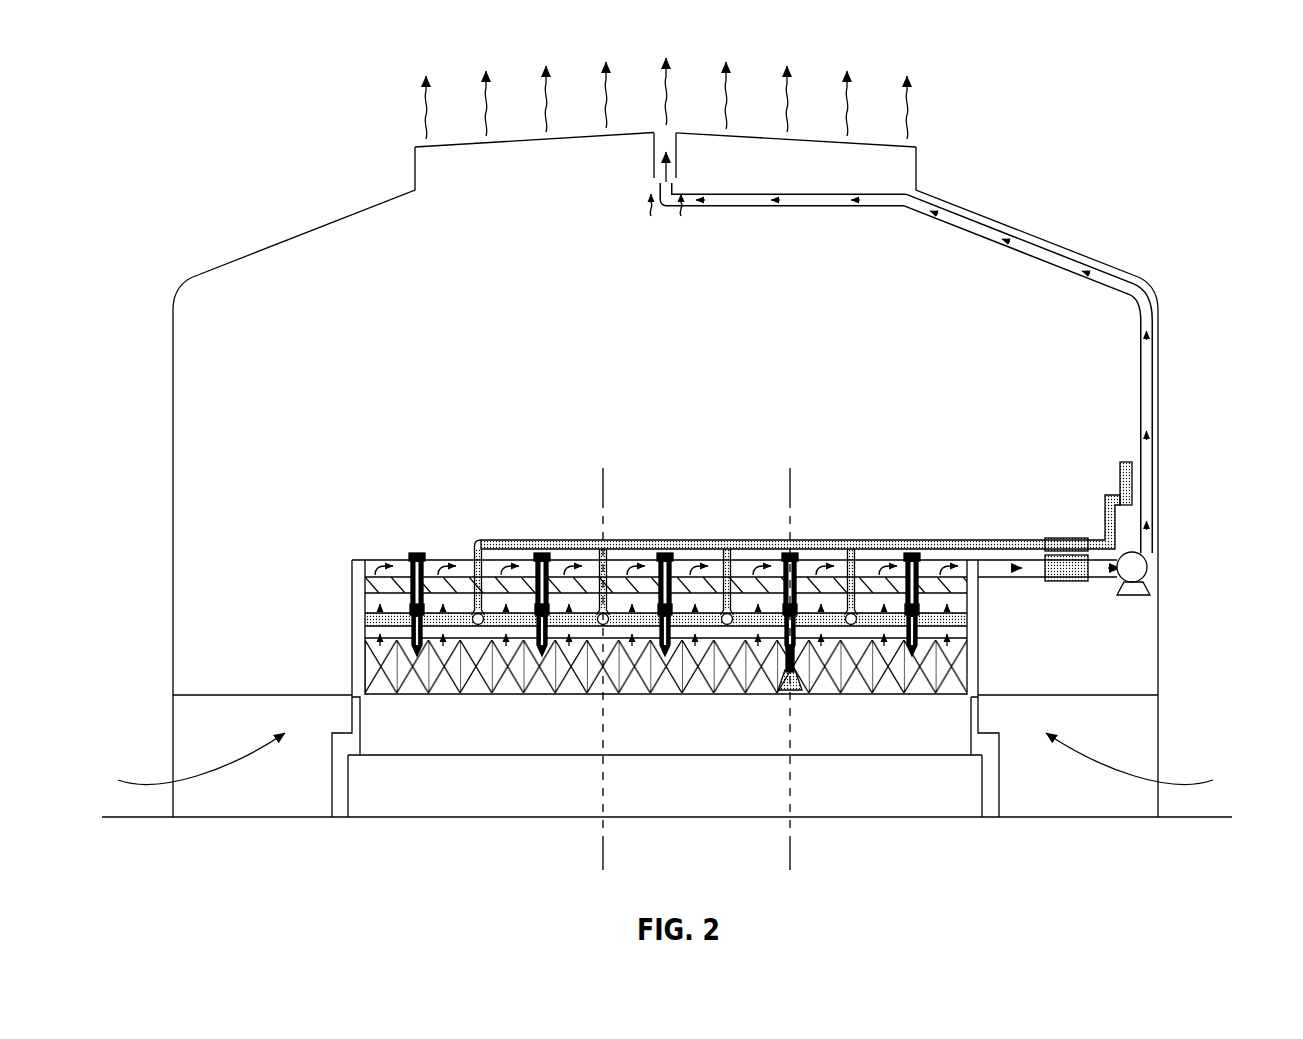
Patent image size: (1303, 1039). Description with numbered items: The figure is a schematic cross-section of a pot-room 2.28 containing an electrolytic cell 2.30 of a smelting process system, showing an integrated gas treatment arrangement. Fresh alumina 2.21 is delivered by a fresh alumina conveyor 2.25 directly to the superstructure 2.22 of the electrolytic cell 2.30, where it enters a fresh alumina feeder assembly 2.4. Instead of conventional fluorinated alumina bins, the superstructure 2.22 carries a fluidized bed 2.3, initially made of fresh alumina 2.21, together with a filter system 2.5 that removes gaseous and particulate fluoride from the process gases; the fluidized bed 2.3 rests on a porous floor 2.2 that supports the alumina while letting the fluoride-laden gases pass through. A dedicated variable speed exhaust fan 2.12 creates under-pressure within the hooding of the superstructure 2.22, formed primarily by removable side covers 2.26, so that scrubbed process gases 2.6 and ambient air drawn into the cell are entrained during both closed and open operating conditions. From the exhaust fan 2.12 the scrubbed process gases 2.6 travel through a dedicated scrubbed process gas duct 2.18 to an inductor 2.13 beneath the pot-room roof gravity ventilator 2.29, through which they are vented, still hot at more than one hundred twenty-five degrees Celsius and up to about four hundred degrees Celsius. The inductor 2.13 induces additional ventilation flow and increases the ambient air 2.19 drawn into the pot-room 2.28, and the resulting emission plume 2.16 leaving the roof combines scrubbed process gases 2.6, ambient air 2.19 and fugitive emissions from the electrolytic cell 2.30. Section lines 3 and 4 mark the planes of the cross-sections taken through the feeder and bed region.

The porous floor 2.2 is at (365, 625).
The fluidized bed 2.3 is at (403, 615).
The fresh alumina feeder assembly 2.4 is at (712, 603).
The filter system 2.5 is at (371, 576).
The scrubbed process gases 2.6 is at (658, 160).
The variable speed exhaust fan 2.12 is at (1150, 567).
The inductor 2.13 is at (678, 160).
The emission plume 2.16 is at (670, 66).
The scrubbed process gas duct 2.18 is at (1140, 340).
The ambient air 2.19 is at (140, 783).
The fresh alumina 2.21 is at (1120, 478).
The superstructure 2.22 is at (980, 645).
The fresh alumina conveyor 2.25 is at (1040, 543).
The removable side covers 2.26 is at (406, 670).
The pot-room 2.28 is at (173, 440).
The pot-room roof gravity ventilator 2.29 is at (415, 165).
The electrolytic cell 2.30 is at (960, 715).
The section line 3 is at (603, 468).
The section line 4 is at (790, 468).